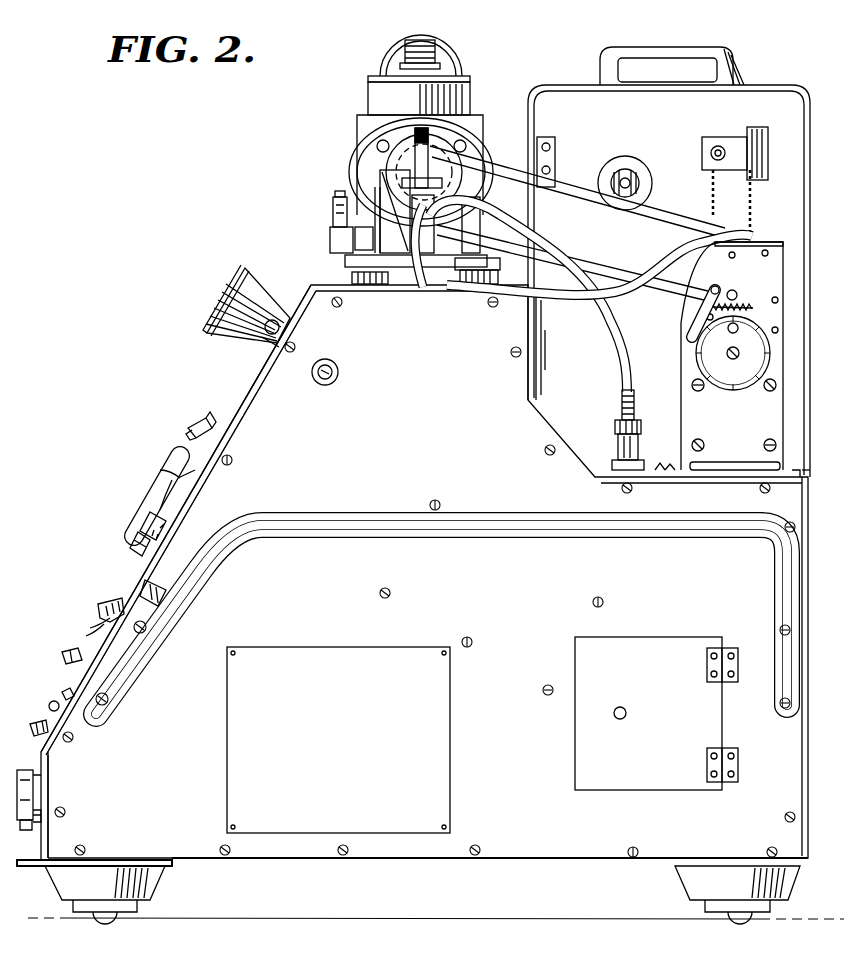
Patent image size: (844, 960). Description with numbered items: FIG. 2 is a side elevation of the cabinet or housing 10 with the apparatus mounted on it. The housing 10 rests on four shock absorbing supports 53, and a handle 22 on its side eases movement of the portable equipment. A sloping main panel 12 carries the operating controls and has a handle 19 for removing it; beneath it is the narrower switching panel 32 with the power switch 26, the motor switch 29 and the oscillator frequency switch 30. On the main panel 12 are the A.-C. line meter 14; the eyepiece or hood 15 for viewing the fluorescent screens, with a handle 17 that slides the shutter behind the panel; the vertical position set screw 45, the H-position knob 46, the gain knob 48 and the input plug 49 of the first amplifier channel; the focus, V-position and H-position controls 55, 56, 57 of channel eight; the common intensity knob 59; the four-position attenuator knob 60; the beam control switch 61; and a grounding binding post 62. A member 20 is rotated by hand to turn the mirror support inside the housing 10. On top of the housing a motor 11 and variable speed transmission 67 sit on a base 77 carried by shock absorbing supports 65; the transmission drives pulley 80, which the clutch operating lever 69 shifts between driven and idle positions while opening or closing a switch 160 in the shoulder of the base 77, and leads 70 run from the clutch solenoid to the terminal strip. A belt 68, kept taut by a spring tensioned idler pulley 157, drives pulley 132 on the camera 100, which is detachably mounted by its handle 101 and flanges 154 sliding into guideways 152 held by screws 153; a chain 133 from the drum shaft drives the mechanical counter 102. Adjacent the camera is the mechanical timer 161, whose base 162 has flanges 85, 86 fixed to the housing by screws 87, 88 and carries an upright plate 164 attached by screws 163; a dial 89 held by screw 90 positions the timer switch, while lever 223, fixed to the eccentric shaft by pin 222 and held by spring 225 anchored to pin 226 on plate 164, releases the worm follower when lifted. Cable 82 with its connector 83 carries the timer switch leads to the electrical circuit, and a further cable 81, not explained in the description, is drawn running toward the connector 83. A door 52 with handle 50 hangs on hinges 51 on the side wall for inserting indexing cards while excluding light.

The housing 10 is at (412, 860).
The motor 11 is at (350, 180).
The main panel 12 is at (246, 398).
The meter 14 is at (295, 300).
The eyepiece or hood 15 is at (226, 289).
The handle 17 is at (268, 343).
The handle 19 is at (160, 492).
The member 20 is at (339, 371).
The handle 22 is at (460, 512).
The switch 26 is at (26, 830).
The switch 29 is at (40, 820).
The switch 30 is at (22, 776).
The switching panel 32 is at (49, 773).
The shaft or set screw 45 is at (176, 486).
The knob 46 is at (133, 542).
The knob 48 is at (92, 636).
The plug 49 is at (66, 690).
The handle 50 is at (619, 720).
The hinges 51 is at (738, 660).
The door 52 is at (650, 640).
The shock absorbing supports 53 is at (68, 884).
The focus control 55 is at (194, 426).
The V-position control 56 is at (188, 470).
The H-position control 57 is at (146, 522).
The knob 59 is at (106, 602).
The control knob 60 is at (70, 654).
The beam control switch 61 is at (50, 702).
The binding post 62 is at (38, 722).
The shock absorbing supports 65 is at (355, 278).
The variable speed transmission 67 is at (472, 86).
The belt 68 is at (512, 172).
The operating lever 69 is at (417, 140).
The leads 70 is at (430, 284).
The base 77 is at (345, 258).
The pulley 80 is at (388, 172).
The cable 81 is at (570, 264).
The cable 82 is at (680, 268).
The connector 83 is at (616, 440).
The flange 85 is at (660, 471).
The flange 86 is at (802, 476).
The screw 87 is at (671, 471).
The screw 88 is at (794, 475).
The dial 89 is at (696, 351).
The screw 90 is at (735, 360).
The camera 100 is at (762, 88).
The handle 101 is at (660, 47).
The mechanical counter 102 is at (715, 130).
The pulley 132 is at (748, 231).
The chain 133 is at (711, 192).
The guideways 152 is at (547, 350).
The screws 153 is at (545, 320).
The flanges 154 is at (541, 296).
The idler pulley 157 is at (631, 160).
The switch 160 is at (395, 212).
The mechanical timer 161 is at (784, 236).
The base 162 is at (681, 394).
The screws 163 is at (698, 439).
The upright plate 164 is at (734, 471).
The pin 222 is at (717, 285).
The lever 223 is at (690, 331).
The spring 225 is at (742, 300).
The pin 226 is at (752, 305).